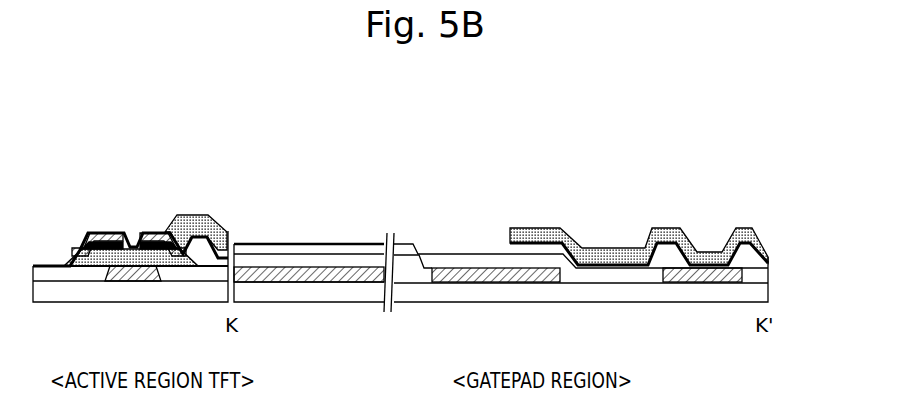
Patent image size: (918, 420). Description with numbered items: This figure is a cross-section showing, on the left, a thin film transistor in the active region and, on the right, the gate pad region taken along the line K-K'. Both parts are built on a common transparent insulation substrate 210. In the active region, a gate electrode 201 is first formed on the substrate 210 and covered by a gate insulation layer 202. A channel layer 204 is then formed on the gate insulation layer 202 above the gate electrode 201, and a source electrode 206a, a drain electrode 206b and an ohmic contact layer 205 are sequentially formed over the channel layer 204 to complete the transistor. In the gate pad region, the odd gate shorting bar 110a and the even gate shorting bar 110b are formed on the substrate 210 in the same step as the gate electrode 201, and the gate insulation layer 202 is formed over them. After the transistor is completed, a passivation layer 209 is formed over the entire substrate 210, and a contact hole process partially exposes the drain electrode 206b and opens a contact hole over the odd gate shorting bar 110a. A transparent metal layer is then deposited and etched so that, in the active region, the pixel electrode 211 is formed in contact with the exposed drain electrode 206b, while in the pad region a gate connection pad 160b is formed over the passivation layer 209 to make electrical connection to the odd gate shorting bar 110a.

The gate electrode 201 is at (128, 283).
The gate insulation layer 202 is at (290, 261).
The channel layer 204 is at (73, 251).
The ohmic contact layer 205 is at (87, 240).
The source electrode 206a is at (112, 230).
The drain electrode 206b is at (160, 232).
The passivation layer 209 is at (790, 256).
The transparent insulation substrate 210 is at (172, 292).
The pixel electrode 211 is at (204, 215).
The odd gate shorting bar 110a is at (702, 268).
The even gate shorting bar 110b is at (337, 268).
The gate connection pad 160b is at (672, 243).